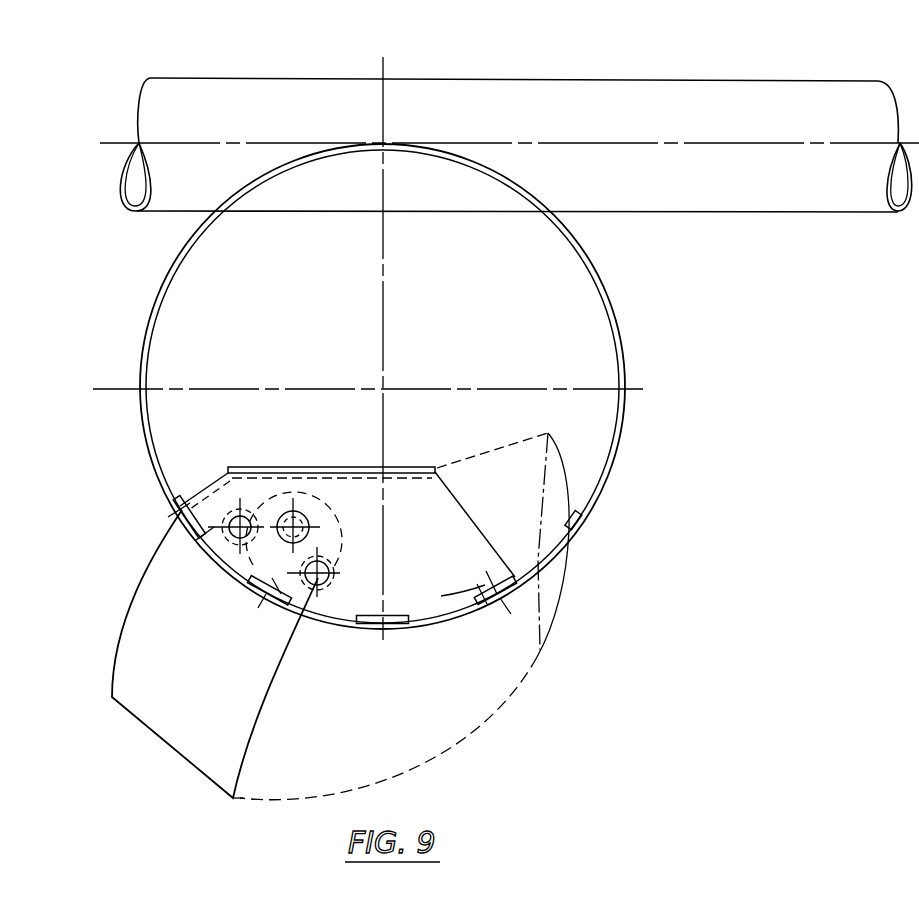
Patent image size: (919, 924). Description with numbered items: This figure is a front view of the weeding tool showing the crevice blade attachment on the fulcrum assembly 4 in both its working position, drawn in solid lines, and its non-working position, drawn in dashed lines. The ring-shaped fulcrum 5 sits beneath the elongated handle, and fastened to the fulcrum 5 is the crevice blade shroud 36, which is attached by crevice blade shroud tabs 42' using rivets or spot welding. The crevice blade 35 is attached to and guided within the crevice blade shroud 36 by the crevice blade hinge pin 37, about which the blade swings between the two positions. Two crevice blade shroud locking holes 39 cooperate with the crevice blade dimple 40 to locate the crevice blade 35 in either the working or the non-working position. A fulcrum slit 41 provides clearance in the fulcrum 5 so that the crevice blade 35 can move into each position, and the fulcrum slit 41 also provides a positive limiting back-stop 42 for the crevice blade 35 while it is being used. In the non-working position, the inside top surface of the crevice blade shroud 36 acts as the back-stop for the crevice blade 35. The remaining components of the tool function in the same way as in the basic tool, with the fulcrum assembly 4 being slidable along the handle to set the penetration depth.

The fulcrum assembly 4 is at (500, 78).
The fulcrum 5 is at (548, 563).
The crevice blade 35 is at (167, 755).
The crevice blade shroud 36 is at (445, 597).
The crevice blade hinge pin 37 is at (305, 512).
The crevice blade shroud locking holes 39 is at (237, 532).
The crevice blade dimple 40 is at (200, 543).
The fulcrum slit 41 is at (580, 528).
The positive limiting back-stop 42 is at (257, 559).
The crevice blade shroud tabs 42' is at (496, 622).